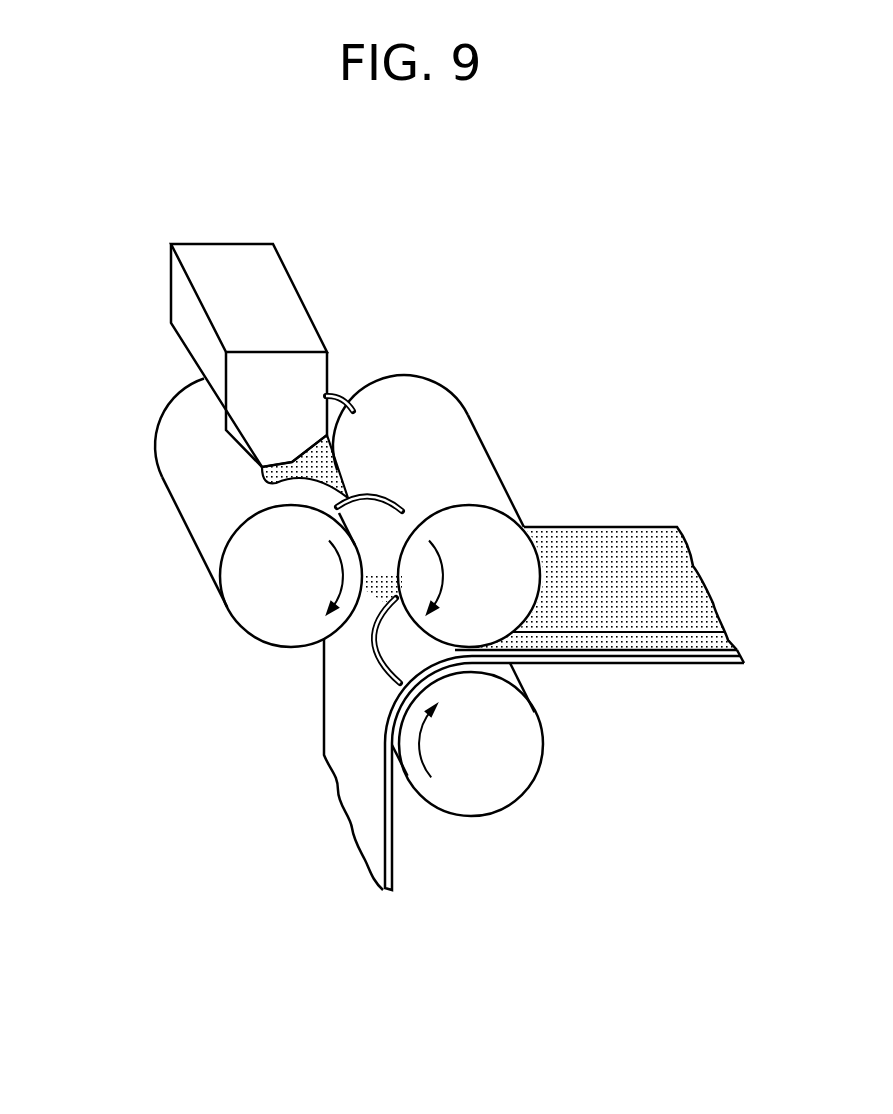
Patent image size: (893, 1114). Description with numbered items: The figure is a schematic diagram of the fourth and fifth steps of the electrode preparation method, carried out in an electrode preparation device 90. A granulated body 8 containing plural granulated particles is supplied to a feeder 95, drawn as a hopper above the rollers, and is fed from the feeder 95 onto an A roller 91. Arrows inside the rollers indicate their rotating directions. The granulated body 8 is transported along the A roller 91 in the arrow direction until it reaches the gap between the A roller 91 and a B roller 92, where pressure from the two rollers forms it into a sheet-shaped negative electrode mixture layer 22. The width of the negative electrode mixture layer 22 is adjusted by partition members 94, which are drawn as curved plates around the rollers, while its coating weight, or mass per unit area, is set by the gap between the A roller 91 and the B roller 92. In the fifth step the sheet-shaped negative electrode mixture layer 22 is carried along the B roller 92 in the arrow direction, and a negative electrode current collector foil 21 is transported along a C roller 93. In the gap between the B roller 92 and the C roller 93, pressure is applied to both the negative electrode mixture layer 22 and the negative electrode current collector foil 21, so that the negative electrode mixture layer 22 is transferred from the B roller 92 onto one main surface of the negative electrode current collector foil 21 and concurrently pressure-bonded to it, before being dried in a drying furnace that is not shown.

The electrode preparation device 90 is at (115, 274).
The feeder 95 is at (230, 253).
The granulated body 8 is at (262, 467).
The A roller 91 is at (172, 413).
The B roller 92 is at (432, 394).
The C roller 93 is at (525, 777).
The partition members 94 is at (337, 398).
The negative electrode mixture layer 22 is at (628, 533).
The negative electrode current collector foil 21 is at (354, 792).